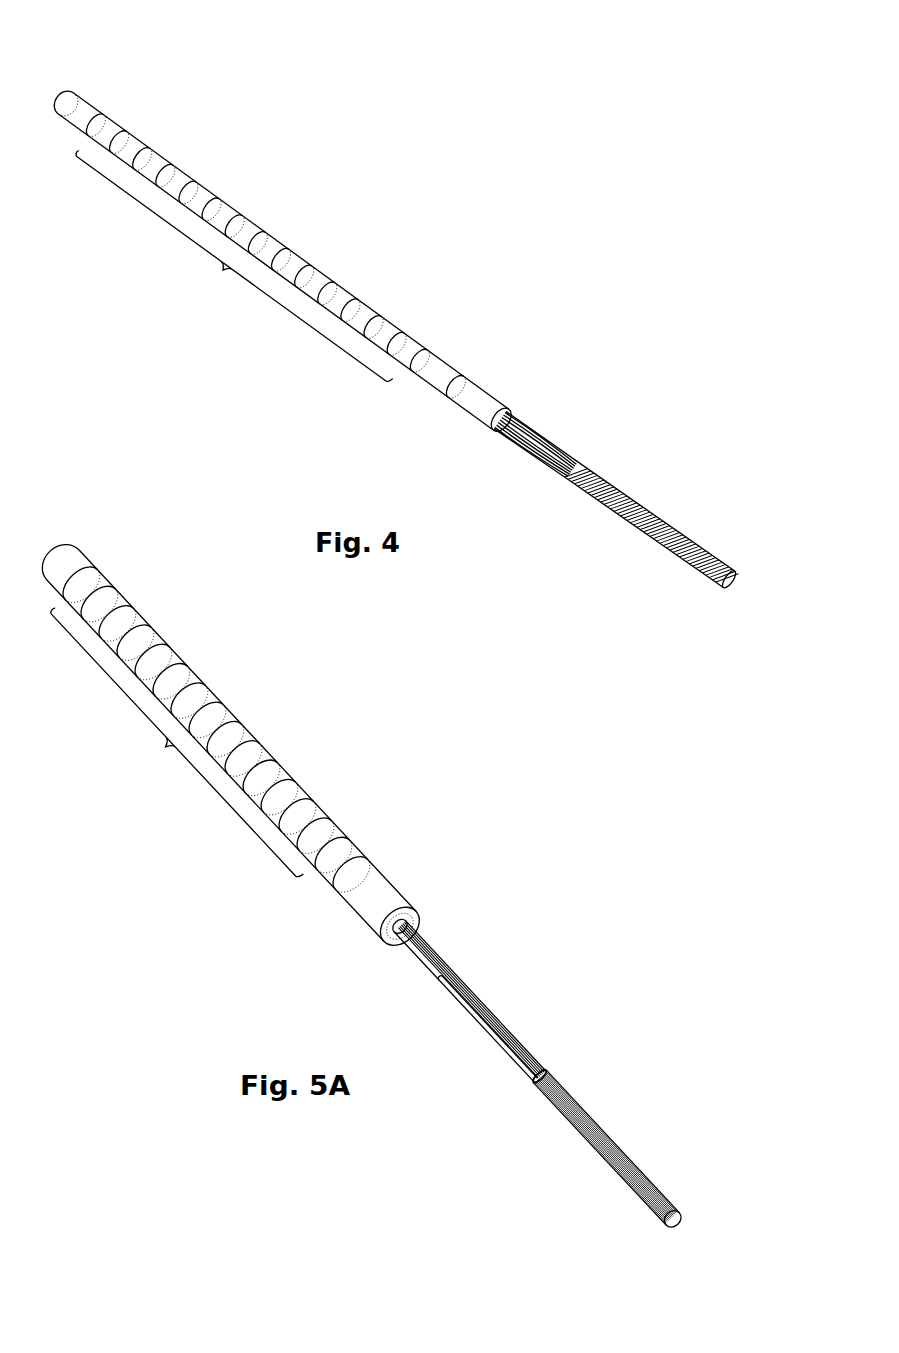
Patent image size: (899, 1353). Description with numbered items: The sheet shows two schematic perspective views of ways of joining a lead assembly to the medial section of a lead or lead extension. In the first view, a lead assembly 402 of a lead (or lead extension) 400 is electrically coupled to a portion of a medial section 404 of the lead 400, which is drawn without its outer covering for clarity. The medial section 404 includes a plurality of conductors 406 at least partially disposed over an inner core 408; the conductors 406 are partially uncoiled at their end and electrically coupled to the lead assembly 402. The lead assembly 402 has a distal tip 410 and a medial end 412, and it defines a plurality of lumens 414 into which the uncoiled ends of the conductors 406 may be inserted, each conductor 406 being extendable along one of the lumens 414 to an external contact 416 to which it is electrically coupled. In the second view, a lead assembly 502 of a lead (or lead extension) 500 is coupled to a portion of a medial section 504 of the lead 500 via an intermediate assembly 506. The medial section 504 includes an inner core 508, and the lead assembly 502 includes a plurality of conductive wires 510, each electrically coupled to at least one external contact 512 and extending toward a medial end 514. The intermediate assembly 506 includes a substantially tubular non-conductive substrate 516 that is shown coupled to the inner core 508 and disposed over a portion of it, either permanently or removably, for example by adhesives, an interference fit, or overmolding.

In FIG. 4, the lead (or lead extension) 400 is at (644, 308).
In FIG. 4, the lead assembly 402 is at (333, 213).
In FIG. 4, the medial section 404 is at (654, 440).
In FIG. 4, the conductors 406 is at (677, 520).
In FIG. 4, the inner core 408 is at (740, 582).
In FIG. 4, the distal tip 410 is at (82, 82).
In FIG. 4, the medial end 412 is at (522, 385).
In FIG. 4, the lumens 414 is at (548, 420).
In FIG. 4, the external contact 416 is at (232, 269).
In FIG. 5A, the lead (or lead extension) 500 is at (580, 830).
In FIG. 5A, the lead assembly 502 is at (313, 713).
In FIG. 5A, the medial section 504 is at (655, 1068).
In FIG. 5A, the intermediate assembly 506 is at (505, 968).
In FIG. 5A, the inner core 508 is at (633, 1157).
In FIG. 5A, the conductive wires 510 is at (442, 935).
In FIG. 5A, the external contact 512 is at (173, 745).
In FIG. 5A, the medial end 514 is at (432, 893).
In FIG. 5A, the non-conductive substrate 516 is at (498, 1025).